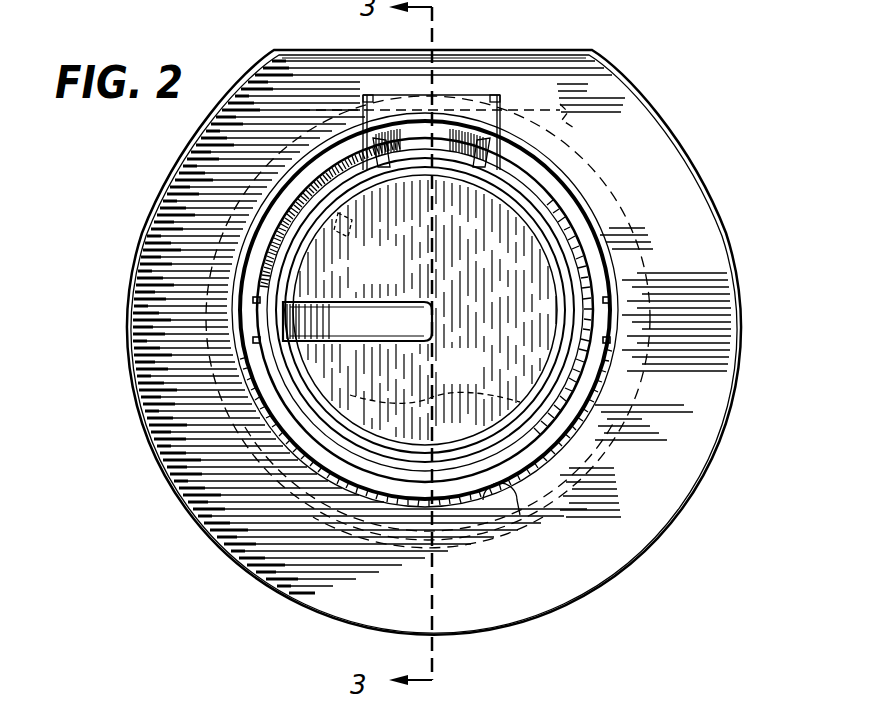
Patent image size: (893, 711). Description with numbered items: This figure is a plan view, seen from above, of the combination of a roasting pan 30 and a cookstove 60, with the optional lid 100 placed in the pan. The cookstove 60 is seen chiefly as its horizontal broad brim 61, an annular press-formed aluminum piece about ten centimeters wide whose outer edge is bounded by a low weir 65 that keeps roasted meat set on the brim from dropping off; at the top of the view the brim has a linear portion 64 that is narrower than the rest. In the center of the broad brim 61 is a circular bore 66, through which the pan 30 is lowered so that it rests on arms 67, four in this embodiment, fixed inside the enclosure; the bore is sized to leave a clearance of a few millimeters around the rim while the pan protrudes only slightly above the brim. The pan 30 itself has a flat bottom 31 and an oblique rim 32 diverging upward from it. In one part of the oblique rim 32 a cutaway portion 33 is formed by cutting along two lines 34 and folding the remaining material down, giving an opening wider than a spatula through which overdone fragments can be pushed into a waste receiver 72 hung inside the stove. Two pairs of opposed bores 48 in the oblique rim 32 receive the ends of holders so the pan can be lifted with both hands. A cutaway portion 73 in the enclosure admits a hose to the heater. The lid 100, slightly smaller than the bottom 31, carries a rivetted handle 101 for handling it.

The roasting pan 30 is at (593, 220).
The flat bottom 31 is at (593, 398).
The oblique rim 32 is at (593, 372).
The cutaway portion 33 is at (403, 137).
The lines along which to cut off 34 is at (497, 107).
The bores 48 is at (612, 340).
The cookstove 60 is at (745, 365).
The horizontal broad brim 61 is at (597, 127).
The linear portion 64 is at (530, 54).
The low weir 65 is at (143, 201).
The bore 66 is at (520, 515).
The arms 67 is at (415, 400).
The waste receiver 72 is at (462, 128).
The cutaway portion of the enclosure 73 is at (417, 92).
The lid 100 is at (293, 394).
The rivetted handle 101 is at (376, 302).